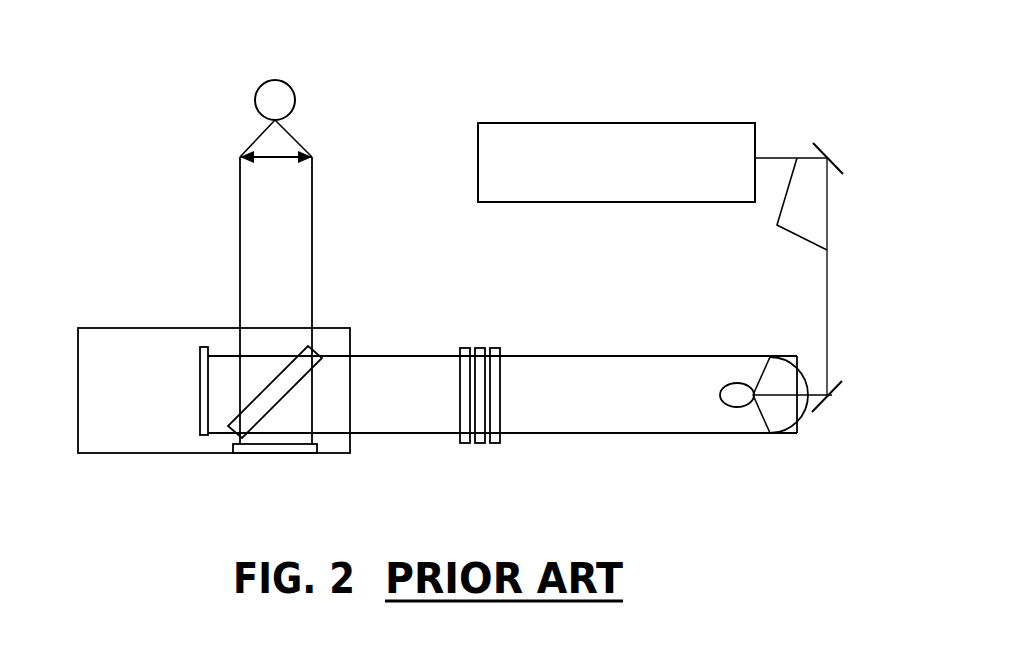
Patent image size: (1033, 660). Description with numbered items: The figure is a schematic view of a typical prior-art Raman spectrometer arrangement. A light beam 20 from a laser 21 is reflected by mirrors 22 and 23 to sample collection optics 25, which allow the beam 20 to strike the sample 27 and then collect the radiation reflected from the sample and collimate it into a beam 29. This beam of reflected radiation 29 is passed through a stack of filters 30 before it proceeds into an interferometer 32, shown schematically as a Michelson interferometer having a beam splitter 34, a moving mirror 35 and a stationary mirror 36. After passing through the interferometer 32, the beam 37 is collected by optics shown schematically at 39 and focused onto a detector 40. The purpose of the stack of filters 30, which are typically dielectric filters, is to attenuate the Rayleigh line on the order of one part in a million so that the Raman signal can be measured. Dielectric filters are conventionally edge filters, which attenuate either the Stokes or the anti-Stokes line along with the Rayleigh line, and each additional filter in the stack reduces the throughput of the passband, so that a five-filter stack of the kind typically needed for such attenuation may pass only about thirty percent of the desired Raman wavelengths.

The light beam 20 is at (777, 228).
The laser 21 is at (652, 131).
The mirror 22 is at (862, 128).
The mirror 23 is at (859, 428).
The sample collection optics 25 is at (765, 372).
The sample 27 is at (696, 444).
The beam of reflected radiation 29 is at (502, 354).
The stack of filters 30 is at (467, 348).
The interferometer 32 is at (192, 416).
The beam splitter 34 is at (322, 356).
The moving mirror 35 is at (128, 357).
The stationary mirror 36 is at (239, 480).
The beam 37 is at (328, 300).
The optics 39 is at (216, 128).
The detector 40 is at (216, 75).